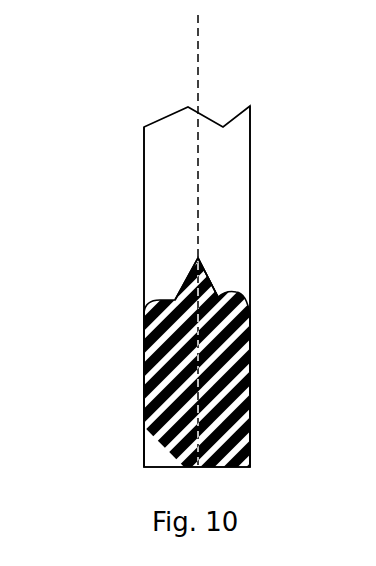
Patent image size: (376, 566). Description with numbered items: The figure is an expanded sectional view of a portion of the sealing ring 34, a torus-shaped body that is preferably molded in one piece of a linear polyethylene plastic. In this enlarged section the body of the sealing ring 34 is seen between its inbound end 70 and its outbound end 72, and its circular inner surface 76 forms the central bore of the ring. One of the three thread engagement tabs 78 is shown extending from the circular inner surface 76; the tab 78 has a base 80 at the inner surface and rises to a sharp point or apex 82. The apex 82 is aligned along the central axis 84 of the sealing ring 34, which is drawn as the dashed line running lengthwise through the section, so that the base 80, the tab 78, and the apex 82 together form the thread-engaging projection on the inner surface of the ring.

The sealing ring 34 is at (103, 126).
The inbound end 70 is at (250, 147).
The outbound end 72 is at (144, 168).
The circular inner surface 76 is at (197, 286).
The thread engagement tab 78 is at (212, 282).
The base 80 is at (236, 292).
The apex 82 is at (199, 258).
The central axis 84 is at (198, 60).